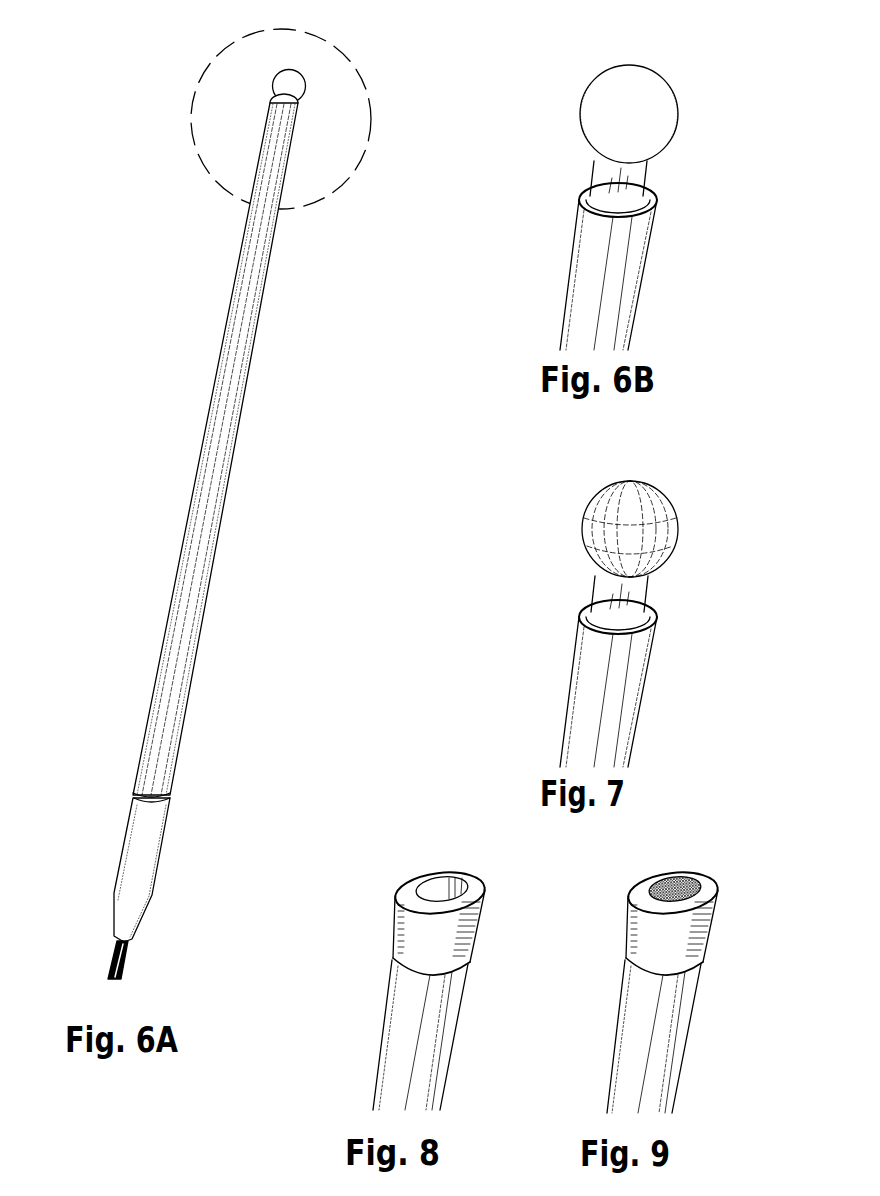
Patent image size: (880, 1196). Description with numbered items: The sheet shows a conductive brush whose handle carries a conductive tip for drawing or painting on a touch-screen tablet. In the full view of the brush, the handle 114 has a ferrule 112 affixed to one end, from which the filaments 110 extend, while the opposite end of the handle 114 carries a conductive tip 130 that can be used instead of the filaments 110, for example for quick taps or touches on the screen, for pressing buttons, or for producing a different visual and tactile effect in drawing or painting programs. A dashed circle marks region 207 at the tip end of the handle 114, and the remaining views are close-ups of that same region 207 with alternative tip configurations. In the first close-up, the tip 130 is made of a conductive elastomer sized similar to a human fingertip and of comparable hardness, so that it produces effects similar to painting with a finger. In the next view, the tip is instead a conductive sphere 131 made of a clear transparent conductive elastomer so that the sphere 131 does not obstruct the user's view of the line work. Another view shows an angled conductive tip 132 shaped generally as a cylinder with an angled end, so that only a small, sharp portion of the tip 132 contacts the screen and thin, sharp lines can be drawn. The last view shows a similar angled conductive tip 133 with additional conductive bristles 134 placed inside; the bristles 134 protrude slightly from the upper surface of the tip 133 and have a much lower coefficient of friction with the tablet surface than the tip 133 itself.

In FIG. 6A, the region 207 is at (357, 158).
In FIG. 6A, the handle 114 is at (190, 570).
In FIG. 6A, the ferrule 112 is at (137, 846).
In FIG. 6A, the filaments 110 is at (112, 956).
In FIG. 6B, the conductive tip 130 is at (651, 123).
In FIG. 7, the conductive sphere 131 is at (672, 529).
In FIG. 8, the angled conductive tip 132 is at (463, 930).
In FIG. 9, the angled conductive tip 133 is at (695, 930).
In FIG. 9, the conductive bristles 134 is at (688, 876).